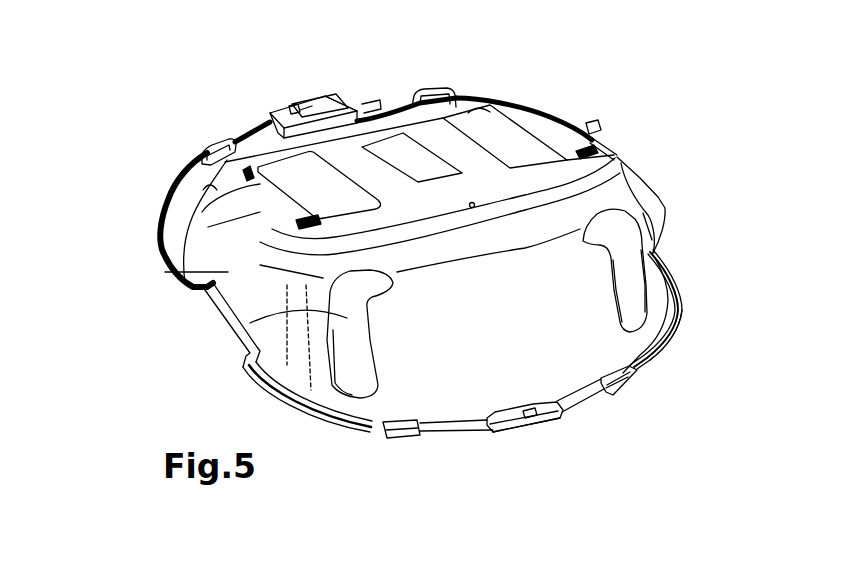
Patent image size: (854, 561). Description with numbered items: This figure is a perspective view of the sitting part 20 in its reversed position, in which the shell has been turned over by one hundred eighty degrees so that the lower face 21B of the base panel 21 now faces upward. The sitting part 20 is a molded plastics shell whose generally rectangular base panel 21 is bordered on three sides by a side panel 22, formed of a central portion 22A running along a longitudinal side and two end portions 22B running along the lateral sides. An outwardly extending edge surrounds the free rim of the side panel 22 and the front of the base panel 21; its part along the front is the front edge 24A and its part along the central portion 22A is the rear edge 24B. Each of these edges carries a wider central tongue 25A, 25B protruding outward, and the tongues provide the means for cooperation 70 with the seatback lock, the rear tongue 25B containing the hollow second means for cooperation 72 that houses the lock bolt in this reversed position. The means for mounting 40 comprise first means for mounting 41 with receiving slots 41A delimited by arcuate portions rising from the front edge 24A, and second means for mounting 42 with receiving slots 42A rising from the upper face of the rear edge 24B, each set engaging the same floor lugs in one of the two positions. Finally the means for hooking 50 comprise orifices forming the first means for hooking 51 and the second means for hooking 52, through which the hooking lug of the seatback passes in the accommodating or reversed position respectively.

The sitting part 20 is at (635, 287).
The base panel 21 is at (260, 195).
The lower face 21B is at (530, 147).
The side panel 22 is at (250, 323).
The central portion 22A is at (463, 403).
The end portions 22B is at (185, 264).
The front edge 24A is at (260, 143).
The rear edge 24B is at (679, 339).
The central tongue 25A is at (304, 109).
The central tongue 25B is at (556, 419).
The means for mounting 40 is at (201, 153).
The first means for mounting 41 is at (228, 144).
The receiving slots 41A is at (203, 196).
The second means for mounting 42 is at (405, 441).
The receiving slots 42A is at (408, 438).
The means for hooking 50 is at (275, 115).
The first means for hooking 51 is at (533, 404).
The second means for hooking 52 is at (285, 107).
The means for cooperation 70 is at (330, 78).
The second means for cooperation 72 is at (325, 100).